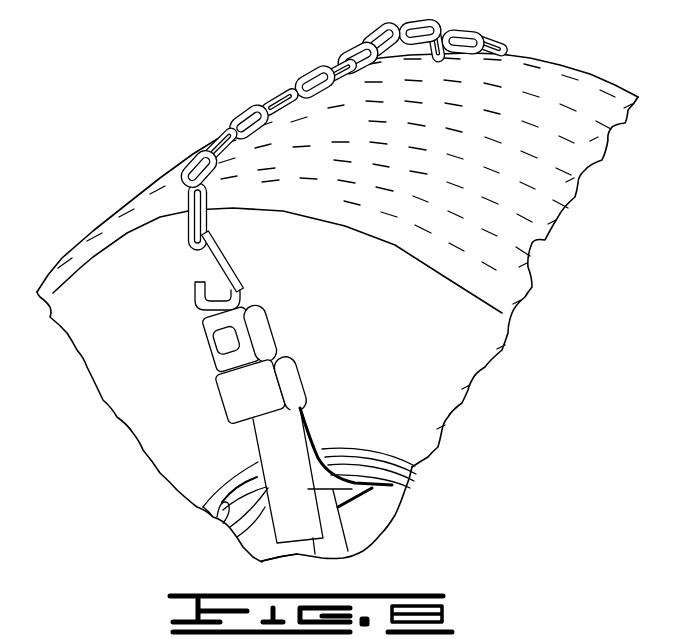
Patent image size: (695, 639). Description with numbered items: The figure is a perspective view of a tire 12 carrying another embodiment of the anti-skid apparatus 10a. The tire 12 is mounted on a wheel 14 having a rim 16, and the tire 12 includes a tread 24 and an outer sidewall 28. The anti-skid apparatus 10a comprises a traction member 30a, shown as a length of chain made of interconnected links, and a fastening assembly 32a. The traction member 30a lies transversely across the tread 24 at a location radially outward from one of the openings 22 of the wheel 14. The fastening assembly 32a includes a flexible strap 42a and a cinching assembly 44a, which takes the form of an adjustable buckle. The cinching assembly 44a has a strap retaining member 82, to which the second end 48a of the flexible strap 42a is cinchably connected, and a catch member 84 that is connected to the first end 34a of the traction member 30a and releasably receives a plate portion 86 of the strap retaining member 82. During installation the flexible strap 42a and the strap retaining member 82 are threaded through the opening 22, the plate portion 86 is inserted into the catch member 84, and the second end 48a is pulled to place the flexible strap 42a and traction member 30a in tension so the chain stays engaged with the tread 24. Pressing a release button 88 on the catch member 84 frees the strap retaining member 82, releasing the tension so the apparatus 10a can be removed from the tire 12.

The anti-skid apparatus 10a is at (339, 130).
The tire 12 is at (577, 67).
The wheel 14 is at (253, 547).
The rim 16 is at (220, 523).
The openings 22 is at (375, 502).
The tread 24 is at (163, 177).
The outer sidewall 28 is at (88, 318).
The traction member 30a is at (220, 102).
The fastening assembly 32a is at (223, 407).
The first end of the traction member 34a is at (197, 250).
The flexible strap 42a is at (322, 459).
The cinching assembly 44a is at (295, 370).
The second end of the flexible strap 48a is at (240, 537).
The strap retaining member 82 is at (217, 386).
The catch member 84 is at (253, 327).
The plate portion 86 is at (267, 363).
The release button 88 is at (223, 343).